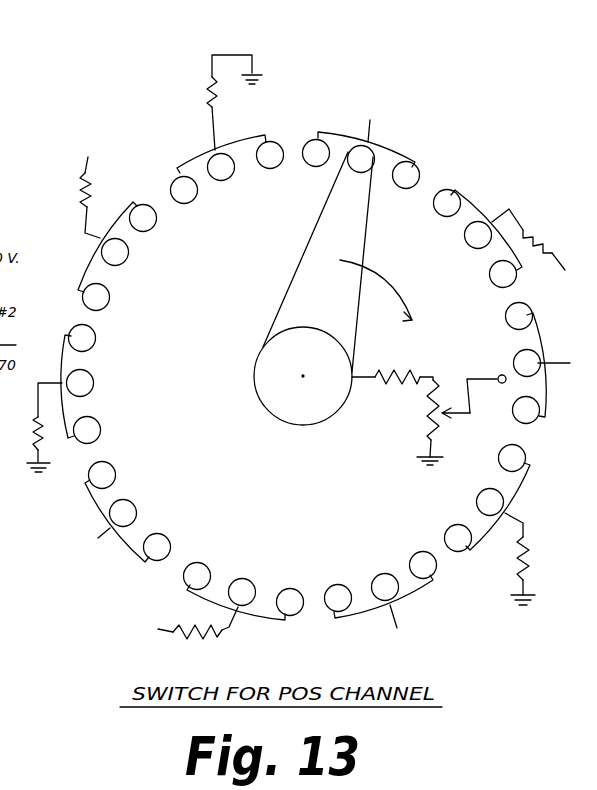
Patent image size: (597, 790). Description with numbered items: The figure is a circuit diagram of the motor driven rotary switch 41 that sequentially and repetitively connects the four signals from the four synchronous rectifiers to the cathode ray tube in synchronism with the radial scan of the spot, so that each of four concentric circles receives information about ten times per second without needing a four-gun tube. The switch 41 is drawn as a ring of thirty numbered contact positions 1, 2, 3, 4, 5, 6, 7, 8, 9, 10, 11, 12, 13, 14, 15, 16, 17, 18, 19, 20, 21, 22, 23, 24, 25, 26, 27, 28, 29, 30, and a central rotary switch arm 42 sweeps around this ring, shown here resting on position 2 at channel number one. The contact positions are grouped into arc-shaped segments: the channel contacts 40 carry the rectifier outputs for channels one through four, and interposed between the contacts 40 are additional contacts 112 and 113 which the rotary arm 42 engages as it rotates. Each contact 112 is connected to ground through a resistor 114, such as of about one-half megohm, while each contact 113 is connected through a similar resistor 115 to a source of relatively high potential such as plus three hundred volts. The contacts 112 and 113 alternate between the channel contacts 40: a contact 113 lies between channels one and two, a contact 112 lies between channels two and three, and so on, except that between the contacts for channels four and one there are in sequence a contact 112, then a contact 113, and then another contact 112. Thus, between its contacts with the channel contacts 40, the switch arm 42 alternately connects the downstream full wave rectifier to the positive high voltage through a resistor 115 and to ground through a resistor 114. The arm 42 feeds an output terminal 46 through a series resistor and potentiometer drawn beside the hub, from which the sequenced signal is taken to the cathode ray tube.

The switch contact 1 is at (316, 153).
The switch contact 2 is at (361, 159).
The switch contact 3 is at (406, 175).
The switch contact 4 is at (447, 203).
The switch contact 5 is at (478, 235).
The switch contact 6 is at (503, 274).
The switch contact 7 is at (519, 316).
The switch contact 8 is at (527, 363).
The switch contact 9 is at (526, 410).
The switch contact 10 is at (512, 458).
The switch contact 11 is at (490, 502).
The switch contact 12 is at (458, 538).
The switch contact 13 is at (423, 565).
The switch contact 14 is at (385, 587).
The switch contact 15 is at (338, 598).
The switch contact 16 is at (290, 602).
The switch contact 17 is at (242, 592).
The switch contact 18 is at (197, 576).
The switch contact 19 is at (157, 547).
The switch contact 20 is at (123, 513).
The switch contact 21 is at (102, 475).
The switch contact 22 is at (87, 430).
The switch contact 23 is at (80, 383).
The switch contact 24 is at (82, 338).
The switch contact 25 is at (96, 297).
The switch contact 26 is at (115, 252).
The switch contact 27 is at (143, 218).
The switch contact 28 is at (184, 190).
The switch contact 29 is at (221, 167).
The switch contact 30 is at (270, 155).
The contacts 40 is at (371, 123).
The motor driven rotary switch 41 is at (267, 497).
The rotary switch arm 42 is at (327, 237).
The output terminal 46 is at (484, 390).
The contact 112 is at (237, 137).
The contact 113 is at (122, 213).
The resistor 114 is at (36, 440).
The resistor 115 is at (80, 195).